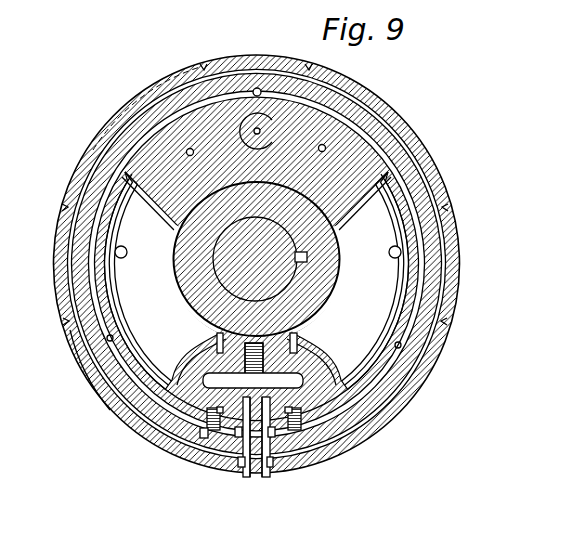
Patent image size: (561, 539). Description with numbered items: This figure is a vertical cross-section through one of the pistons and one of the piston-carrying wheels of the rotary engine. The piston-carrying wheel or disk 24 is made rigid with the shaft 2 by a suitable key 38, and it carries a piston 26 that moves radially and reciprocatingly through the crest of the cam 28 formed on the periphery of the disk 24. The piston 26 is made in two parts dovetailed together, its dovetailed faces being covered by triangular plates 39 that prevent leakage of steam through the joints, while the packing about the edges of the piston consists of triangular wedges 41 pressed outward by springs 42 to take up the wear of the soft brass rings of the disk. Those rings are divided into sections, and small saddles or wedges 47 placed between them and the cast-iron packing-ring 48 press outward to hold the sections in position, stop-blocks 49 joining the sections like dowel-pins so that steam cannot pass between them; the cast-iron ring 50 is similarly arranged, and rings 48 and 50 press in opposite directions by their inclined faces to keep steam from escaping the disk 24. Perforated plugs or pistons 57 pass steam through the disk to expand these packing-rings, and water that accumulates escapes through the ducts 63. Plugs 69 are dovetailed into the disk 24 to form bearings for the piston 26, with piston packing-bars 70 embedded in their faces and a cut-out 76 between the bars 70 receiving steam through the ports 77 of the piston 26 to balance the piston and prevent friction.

The shaft 2 is at (365, 187).
The piston-carrying wheel or disk 24 is at (365, 145).
The piston 26 is at (256, 478).
The cam 28 is at (92, 390).
The key 38 is at (307, 258).
The triangular plates 39 is at (247, 478).
The triangular wedges 41 is at (217, 440).
The springs 42 is at (207, 433).
The saddles or wedges 47 is at (458, 216).
The cast-iron packing-ring 48 is at (440, 256).
The stop-blocks 49 is at (402, 123).
The cast-iron ring 50 is at (438, 242).
The pistons or perforated plugs 57 is at (277, 128).
The ducts 63 is at (392, 105).
The plugs 69 is at (243, 473).
The piston packing-bars 70 is at (203, 443).
The cut-out 76 is at (235, 466).
The ports 77 is at (223, 432).